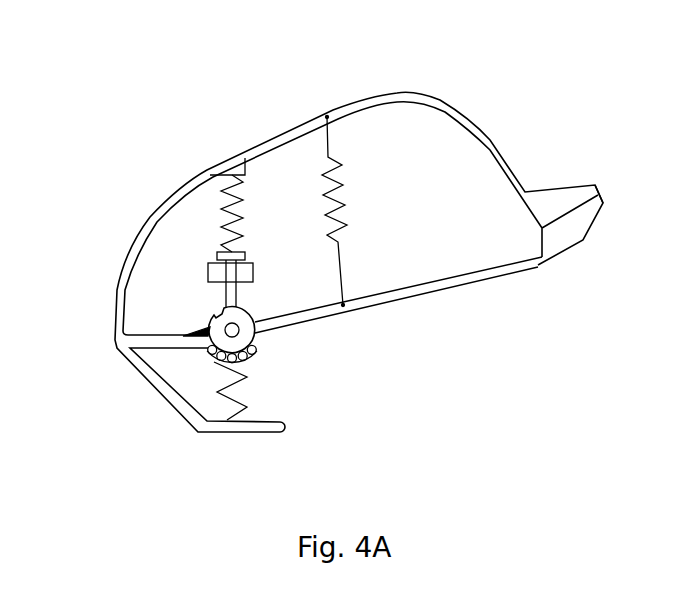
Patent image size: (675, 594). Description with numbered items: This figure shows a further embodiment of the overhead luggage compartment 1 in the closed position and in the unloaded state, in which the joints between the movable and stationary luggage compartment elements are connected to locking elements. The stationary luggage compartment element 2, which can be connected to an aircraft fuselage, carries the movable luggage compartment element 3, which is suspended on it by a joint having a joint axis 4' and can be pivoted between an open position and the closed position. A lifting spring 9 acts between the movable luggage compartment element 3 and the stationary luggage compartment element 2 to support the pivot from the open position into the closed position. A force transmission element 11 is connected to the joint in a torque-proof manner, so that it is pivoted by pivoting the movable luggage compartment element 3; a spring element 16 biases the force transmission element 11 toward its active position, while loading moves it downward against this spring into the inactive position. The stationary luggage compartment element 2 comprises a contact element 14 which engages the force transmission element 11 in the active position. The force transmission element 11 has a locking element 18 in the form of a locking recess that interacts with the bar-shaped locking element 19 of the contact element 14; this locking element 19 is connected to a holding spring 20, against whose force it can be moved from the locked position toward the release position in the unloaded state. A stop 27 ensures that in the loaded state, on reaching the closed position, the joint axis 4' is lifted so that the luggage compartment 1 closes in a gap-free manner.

The overhead luggage compartment 1 is at (231, 88).
The stationary luggage compartment element 2 is at (465, 120).
The movable luggage compartment element 3 is at (467, 280).
The joint axis 4' is at (184, 377).
The lifting spring 9 is at (347, 213).
The force transmission element 11 is at (257, 340).
The contact element 14 is at (195, 286).
The spring element 16 is at (228, 403).
The locking element 18 is at (203, 311).
The locking element 19 is at (232, 302).
The holding spring 20 is at (225, 215).
The stop 27 is at (185, 333).